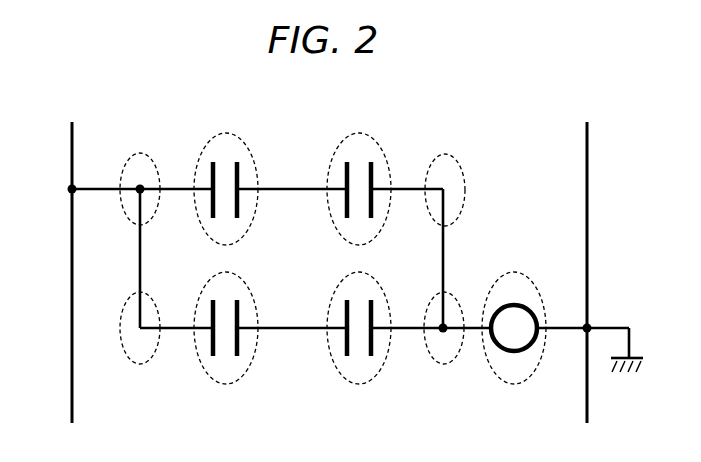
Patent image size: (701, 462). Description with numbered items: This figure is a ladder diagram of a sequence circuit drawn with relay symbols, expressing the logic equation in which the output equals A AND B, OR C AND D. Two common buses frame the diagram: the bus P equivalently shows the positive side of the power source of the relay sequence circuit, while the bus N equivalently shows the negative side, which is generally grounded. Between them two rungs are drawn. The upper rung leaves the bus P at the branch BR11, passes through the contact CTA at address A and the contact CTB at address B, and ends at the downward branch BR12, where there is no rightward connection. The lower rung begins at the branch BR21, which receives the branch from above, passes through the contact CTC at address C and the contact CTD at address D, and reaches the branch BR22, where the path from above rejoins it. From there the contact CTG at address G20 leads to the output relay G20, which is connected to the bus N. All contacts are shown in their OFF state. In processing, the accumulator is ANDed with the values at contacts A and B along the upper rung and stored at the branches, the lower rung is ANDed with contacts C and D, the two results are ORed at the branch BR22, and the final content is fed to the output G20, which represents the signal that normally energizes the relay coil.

The common bus P is at (72, 147).
The common bus N is at (588, 142).
The branch BR11 is at (141, 152).
The downward branch BR12 is at (446, 154).
The branch from above BR21 is at (142, 364).
The branch from above BR22 is at (446, 364).
The contact CTA is at (226, 133).
The contact CTB is at (359, 133).
The contact CTC is at (226, 385).
The contact CTD is at (359, 385).
The contact CTG is at (514, 351).
The output relay G20 is at (514, 315).